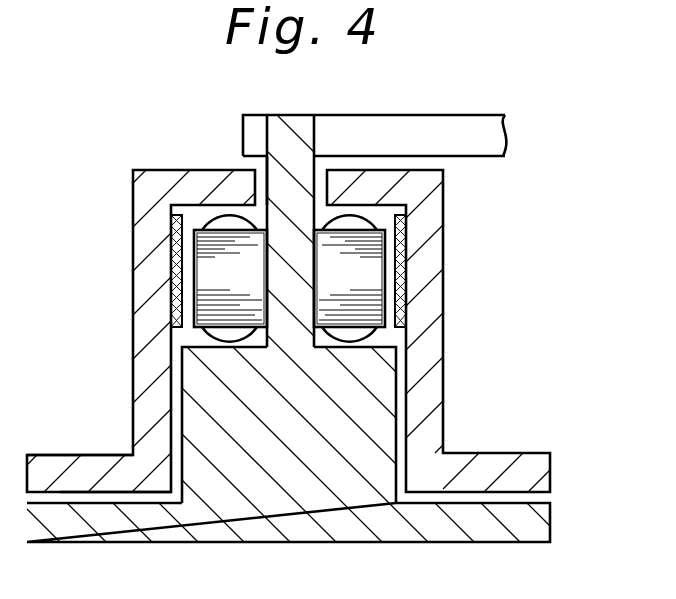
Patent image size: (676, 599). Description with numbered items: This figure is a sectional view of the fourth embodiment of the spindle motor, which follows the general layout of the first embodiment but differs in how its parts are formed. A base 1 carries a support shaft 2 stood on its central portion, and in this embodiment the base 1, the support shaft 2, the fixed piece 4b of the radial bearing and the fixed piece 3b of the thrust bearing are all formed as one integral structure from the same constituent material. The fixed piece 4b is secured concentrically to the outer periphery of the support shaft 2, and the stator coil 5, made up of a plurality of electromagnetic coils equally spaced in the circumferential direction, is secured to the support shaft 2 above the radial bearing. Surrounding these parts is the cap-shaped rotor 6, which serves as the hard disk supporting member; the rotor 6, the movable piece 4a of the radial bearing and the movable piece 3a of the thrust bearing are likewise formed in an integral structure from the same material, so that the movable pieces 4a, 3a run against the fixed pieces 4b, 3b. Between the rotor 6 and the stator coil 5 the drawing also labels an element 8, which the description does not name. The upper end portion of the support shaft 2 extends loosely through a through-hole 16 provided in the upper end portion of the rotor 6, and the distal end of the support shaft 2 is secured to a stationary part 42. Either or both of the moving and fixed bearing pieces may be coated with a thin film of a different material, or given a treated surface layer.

The base 1 is at (233, 525).
The support shaft 2 is at (284, 140).
The movable piece of the thrust bearing 3a is at (130, 495).
The fixed piece of the thrust bearing 3b is at (68, 505).
The movable piece of the radial bearing 4a is at (167, 390).
The fixed piece of the radial bearing 4b is at (406, 367).
The stator coil 5 is at (385, 240).
The rotor 6 is at (146, 196).
The bearing 8 is at (401, 257).
The through-hole 16 is at (262, 180).
The stationary part 42 is at (360, 130).